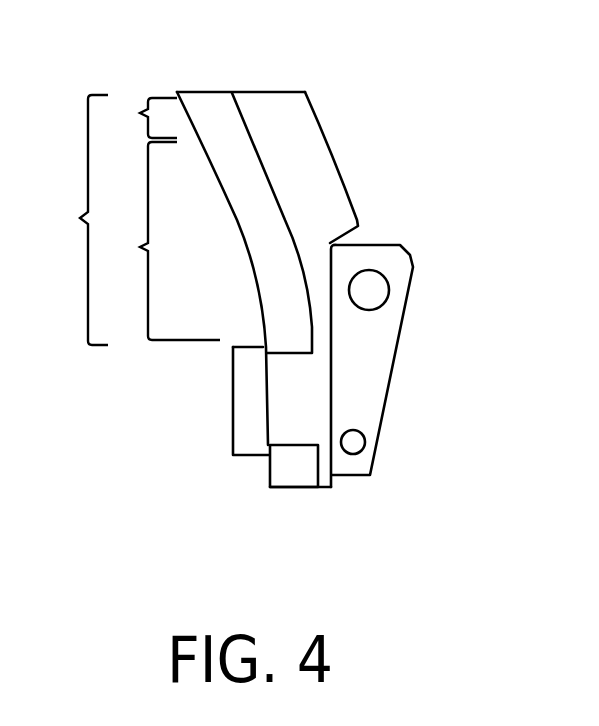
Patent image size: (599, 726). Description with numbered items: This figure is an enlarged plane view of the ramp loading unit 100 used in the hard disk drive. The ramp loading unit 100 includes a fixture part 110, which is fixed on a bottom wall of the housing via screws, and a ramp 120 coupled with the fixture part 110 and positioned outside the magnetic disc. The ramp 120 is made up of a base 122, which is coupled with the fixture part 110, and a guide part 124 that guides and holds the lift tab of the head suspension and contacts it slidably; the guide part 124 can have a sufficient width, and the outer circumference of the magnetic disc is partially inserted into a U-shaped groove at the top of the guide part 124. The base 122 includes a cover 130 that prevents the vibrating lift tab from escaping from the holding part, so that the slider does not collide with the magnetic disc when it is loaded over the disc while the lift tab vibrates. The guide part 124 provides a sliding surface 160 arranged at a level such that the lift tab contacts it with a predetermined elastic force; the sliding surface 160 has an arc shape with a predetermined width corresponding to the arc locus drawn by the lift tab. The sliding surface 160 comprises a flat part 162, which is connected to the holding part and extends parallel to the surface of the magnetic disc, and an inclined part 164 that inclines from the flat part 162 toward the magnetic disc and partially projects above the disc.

The ramp loading unit 100 is at (412, 55).
The fixture part 110 is at (373, 363).
The ramp 120 is at (363, 215).
The base 122 is at (230, 83).
The guide part 124 is at (178, 83).
The cover 130 is at (287, 418).
The sliding surface 160 is at (71, 220).
The flat part 162 is at (159, 241).
The inclined part 164 is at (137, 118).